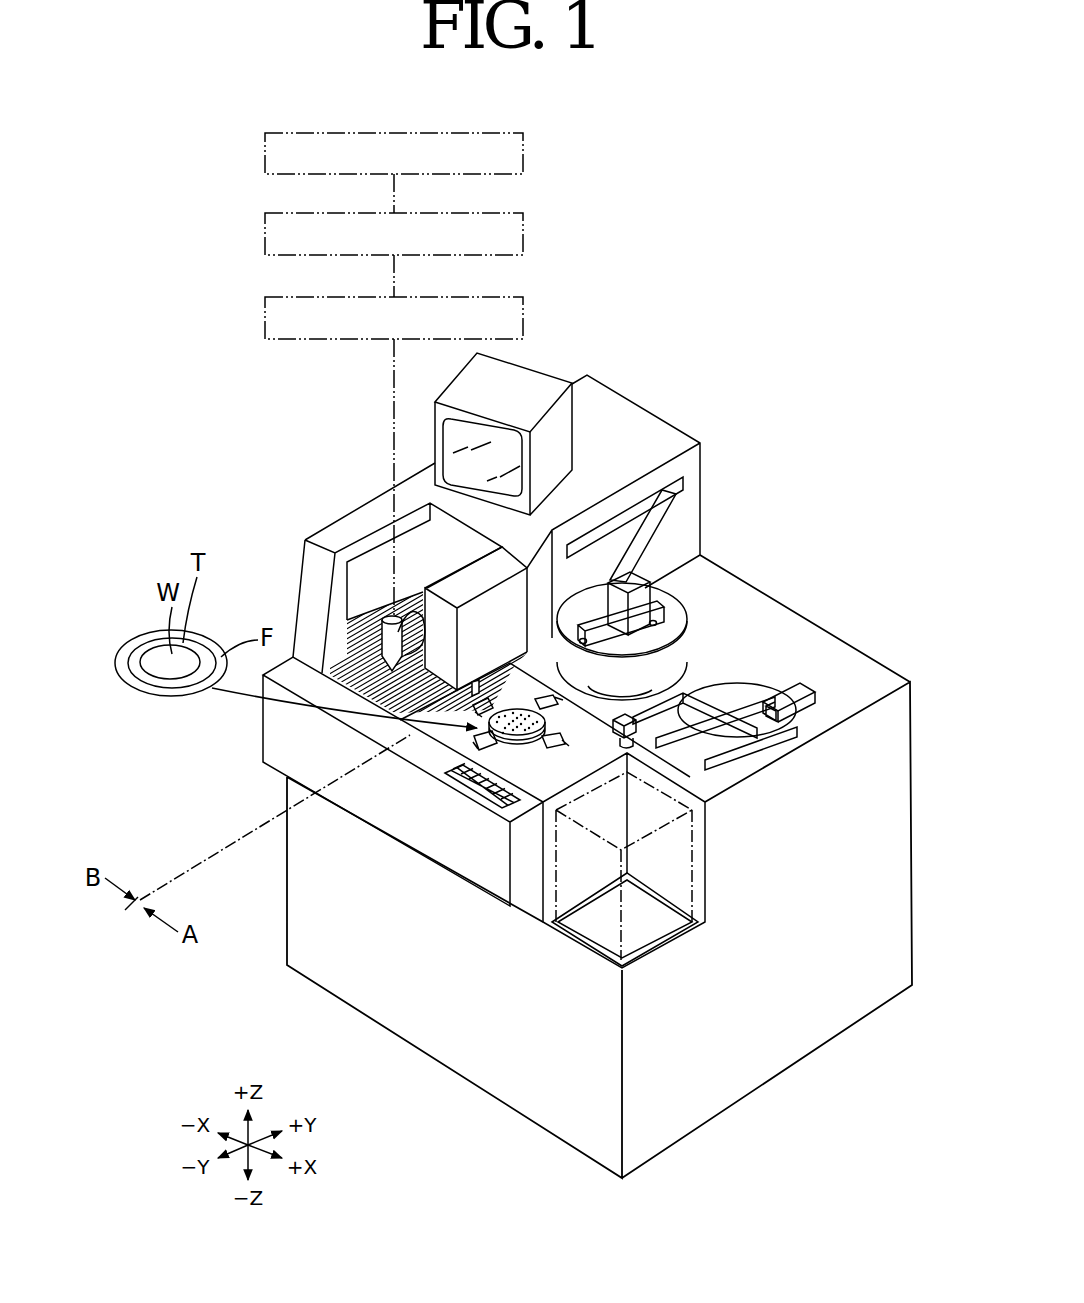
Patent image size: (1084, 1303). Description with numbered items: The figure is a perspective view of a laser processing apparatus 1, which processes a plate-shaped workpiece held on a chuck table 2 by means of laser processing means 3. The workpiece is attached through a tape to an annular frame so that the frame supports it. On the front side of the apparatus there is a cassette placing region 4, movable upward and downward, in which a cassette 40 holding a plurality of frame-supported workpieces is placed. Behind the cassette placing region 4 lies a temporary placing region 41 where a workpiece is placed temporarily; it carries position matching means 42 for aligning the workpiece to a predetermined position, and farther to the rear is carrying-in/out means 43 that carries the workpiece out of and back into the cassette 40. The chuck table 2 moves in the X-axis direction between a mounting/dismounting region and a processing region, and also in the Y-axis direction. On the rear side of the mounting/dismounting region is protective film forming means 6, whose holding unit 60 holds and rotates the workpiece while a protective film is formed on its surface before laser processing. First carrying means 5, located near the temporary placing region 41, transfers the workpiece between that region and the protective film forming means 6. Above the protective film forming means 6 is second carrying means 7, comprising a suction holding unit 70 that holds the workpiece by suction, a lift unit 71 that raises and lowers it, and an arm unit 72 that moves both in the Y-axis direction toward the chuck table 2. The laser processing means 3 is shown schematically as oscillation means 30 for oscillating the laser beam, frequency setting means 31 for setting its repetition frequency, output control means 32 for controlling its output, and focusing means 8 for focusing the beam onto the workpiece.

The laser processing apparatus 1 is at (772, 205).
The chuck table 2 is at (457, 736).
The laser processing means 3 is at (234, 184).
The oscillation means 30 is at (523, 240).
The frequency setting means 31 is at (523, 160).
The output control means 32 is at (523, 322).
The cassette placing region 4 is at (623, 970).
The cassette 40 is at (690, 873).
The temporary placing region 41 is at (745, 742).
The position matching means 42 is at (700, 756).
The carrying-in/out means 43 is at (802, 690).
The first carrying means 5 is at (750, 710).
The protective film forming means 6 is at (650, 692).
The holding unit 60 is at (664, 667).
The second carrying means 7 is at (658, 467).
The suction holding unit 70 is at (676, 612).
The lift unit 71 is at (651, 585).
The arm unit 72 is at (681, 490).
The focusing means 8 is at (352, 623).